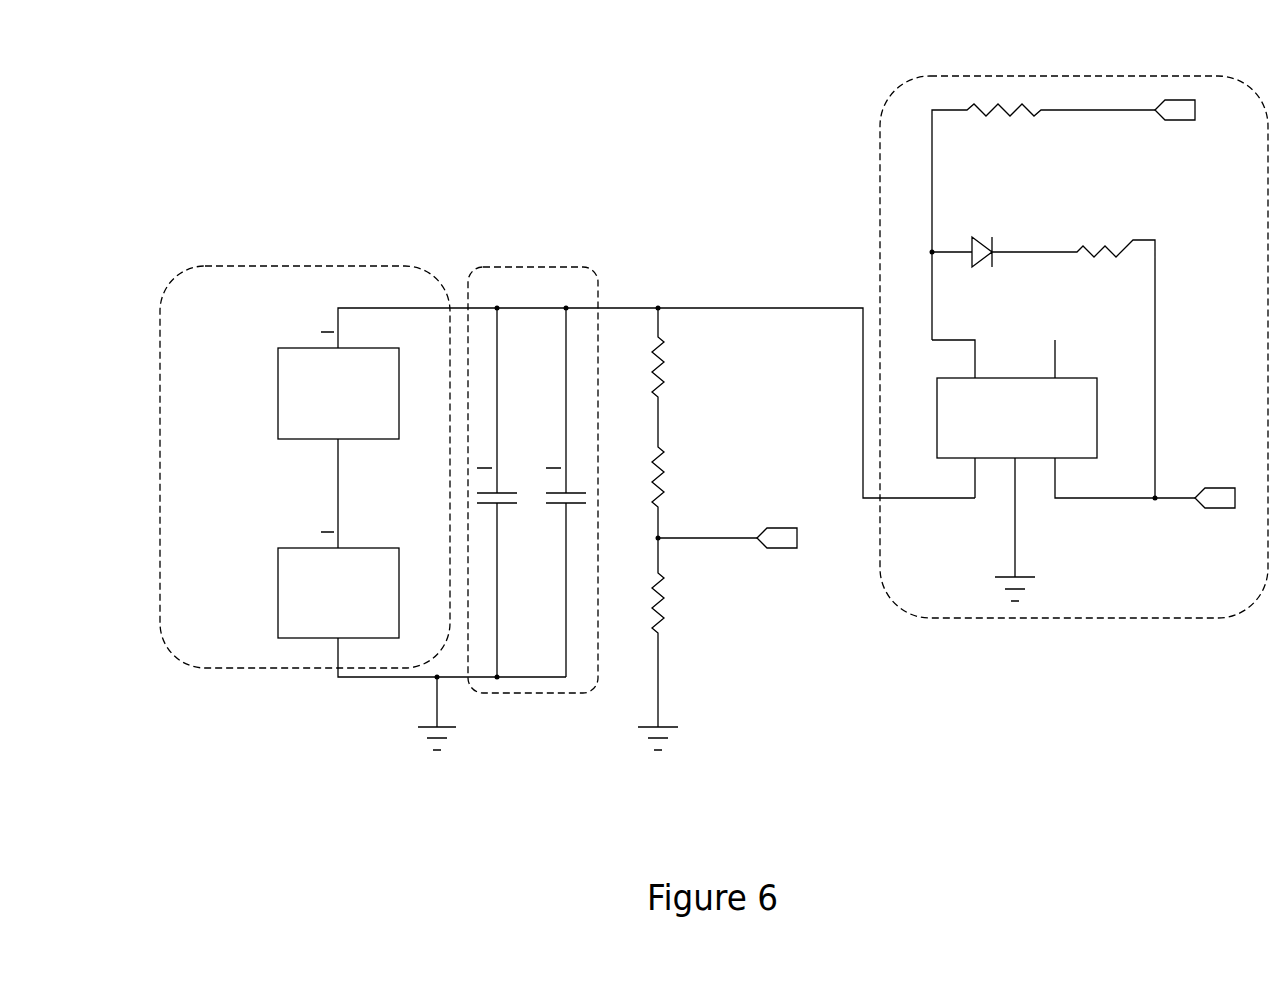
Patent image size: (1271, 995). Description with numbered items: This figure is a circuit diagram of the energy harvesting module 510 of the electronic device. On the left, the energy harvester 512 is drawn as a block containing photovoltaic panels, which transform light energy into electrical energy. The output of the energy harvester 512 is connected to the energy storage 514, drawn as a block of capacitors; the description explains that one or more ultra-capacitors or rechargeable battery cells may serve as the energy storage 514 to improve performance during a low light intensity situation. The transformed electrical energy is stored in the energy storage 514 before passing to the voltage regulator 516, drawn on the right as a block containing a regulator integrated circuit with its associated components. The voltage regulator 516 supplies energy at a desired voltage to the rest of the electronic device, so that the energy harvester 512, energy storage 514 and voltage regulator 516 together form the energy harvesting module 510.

The power supply circuit 510 is at (678, 104).
The energy harvester 512 is at (281, 658).
The energy storage 514 is at (577, 680).
The voltage regulator 516 is at (1135, 100).